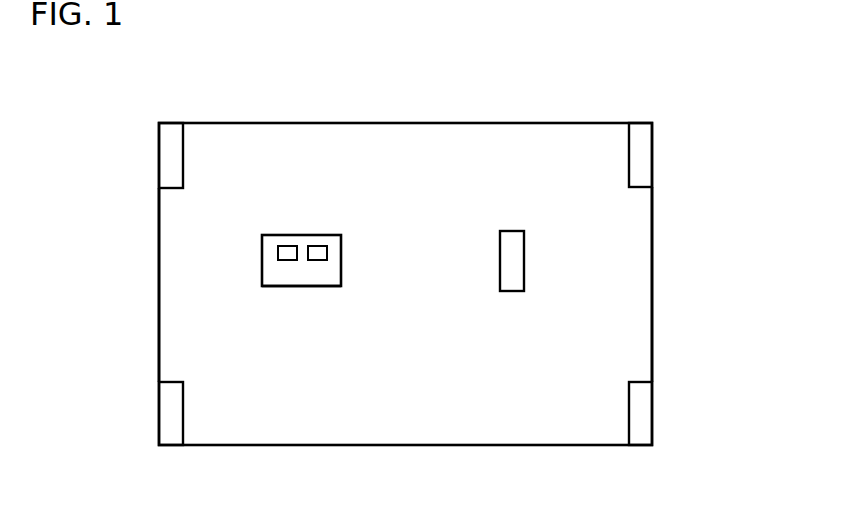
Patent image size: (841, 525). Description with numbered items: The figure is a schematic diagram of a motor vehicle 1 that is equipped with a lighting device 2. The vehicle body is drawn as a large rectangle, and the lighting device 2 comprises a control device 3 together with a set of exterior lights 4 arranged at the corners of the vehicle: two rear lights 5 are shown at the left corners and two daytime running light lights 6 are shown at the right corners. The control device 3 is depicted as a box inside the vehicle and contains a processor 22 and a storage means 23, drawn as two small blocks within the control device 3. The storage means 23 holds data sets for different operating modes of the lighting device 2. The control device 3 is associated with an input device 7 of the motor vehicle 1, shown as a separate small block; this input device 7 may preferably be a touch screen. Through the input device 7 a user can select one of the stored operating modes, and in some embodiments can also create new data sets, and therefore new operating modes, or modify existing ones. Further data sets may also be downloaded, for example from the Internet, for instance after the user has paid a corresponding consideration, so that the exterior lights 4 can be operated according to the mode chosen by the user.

The motor vehicle 1 is at (456, 98).
The lighting device 2 is at (360, 212).
The control device 3 is at (309, 287).
The exterior lights 4 is at (130, 146).
The rear lights 5 is at (170, 145).
The daytime running light lights 6 is at (640, 140).
The input device 7 is at (512, 230).
The processor 22 is at (316, 244).
The storage means 23 is at (285, 244).